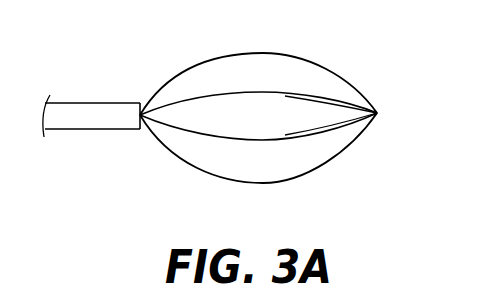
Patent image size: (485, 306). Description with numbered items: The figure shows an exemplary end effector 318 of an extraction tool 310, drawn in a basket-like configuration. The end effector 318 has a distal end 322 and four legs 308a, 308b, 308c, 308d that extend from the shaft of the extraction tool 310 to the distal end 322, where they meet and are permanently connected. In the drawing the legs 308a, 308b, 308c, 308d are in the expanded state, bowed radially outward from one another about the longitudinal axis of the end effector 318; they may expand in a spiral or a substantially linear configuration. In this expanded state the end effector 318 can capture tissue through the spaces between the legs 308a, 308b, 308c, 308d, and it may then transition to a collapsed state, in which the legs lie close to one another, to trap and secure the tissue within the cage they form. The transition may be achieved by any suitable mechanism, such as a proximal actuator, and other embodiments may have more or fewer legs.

The extraction tool 310 is at (106, 136).
The end effector 318 is at (280, 133).
The leg 308a is at (298, 176).
The leg 308b is at (312, 142).
The leg 308c is at (310, 90).
The leg 308d is at (298, 55).
The distal end 322 is at (386, 113).